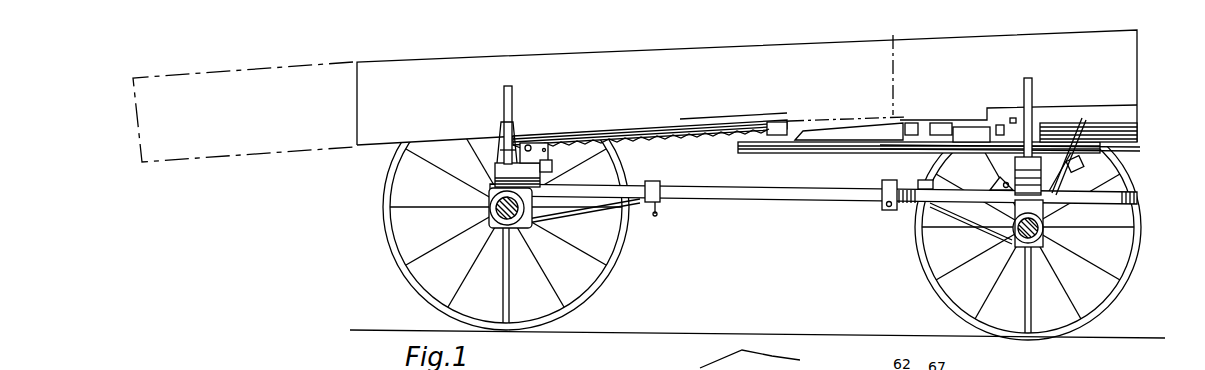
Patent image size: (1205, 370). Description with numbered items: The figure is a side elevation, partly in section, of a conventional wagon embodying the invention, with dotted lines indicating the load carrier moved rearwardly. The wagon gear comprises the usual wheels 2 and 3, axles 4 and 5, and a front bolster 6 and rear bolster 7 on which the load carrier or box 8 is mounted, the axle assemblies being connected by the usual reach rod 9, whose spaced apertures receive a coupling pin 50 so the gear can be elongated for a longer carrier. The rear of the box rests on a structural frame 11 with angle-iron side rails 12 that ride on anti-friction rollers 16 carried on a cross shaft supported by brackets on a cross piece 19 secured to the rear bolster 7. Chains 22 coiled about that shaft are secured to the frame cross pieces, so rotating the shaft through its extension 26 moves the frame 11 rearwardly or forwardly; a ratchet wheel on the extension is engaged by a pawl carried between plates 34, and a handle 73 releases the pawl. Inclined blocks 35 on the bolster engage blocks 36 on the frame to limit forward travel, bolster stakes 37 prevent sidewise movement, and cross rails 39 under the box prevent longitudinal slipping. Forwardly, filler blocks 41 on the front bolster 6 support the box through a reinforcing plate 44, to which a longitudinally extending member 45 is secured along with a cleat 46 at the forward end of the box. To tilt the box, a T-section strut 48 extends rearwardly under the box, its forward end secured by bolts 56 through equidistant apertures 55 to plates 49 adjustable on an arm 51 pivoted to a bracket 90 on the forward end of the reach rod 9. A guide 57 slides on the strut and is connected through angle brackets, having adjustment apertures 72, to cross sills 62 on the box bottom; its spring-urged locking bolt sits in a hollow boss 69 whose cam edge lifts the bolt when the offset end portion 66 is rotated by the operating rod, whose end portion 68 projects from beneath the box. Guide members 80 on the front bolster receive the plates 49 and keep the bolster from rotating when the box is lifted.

The front wheel 2 is at (1128, 278).
The rear wheel 3 is at (400, 272).
The axle 4 is at (1034, 242).
The axle 5 is at (492, 222).
The front bolster 6 is at (1042, 186).
The rear bolster 7 is at (510, 168).
The load carrier or box 8 is at (428, 62).
The reach rod 9 is at (775, 197).
The structural frame 11 is at (733, 104).
The side rail 12 is at (680, 124).
The anti-friction roller 16 is at (537, 143).
The cross piece 19 is at (575, 179).
The chain 22 is at (662, 144).
The shaft extension 26 is at (528, 144).
The plate 34 is at (552, 160).
The inclined block or abutment 35 is at (499, 176).
The block or abutment 36 is at (499, 160).
The bolster stake 37 is at (509, 90).
The cross rail 39 is at (496, 150).
The filler block 41 is at (1038, 125).
The reinforcing plate 44 is at (1062, 118).
The longitudinally extending member 45 is at (1145, 135).
The cleat 46 is at (1140, 115).
The strut 48 is at (833, 154).
The plate 49 is at (1100, 153).
The coupling bolt or pin 50 is at (655, 218).
The arm 51 is at (1045, 193).
The aperture 55 is at (1142, 147).
The bolt 56 is at (1080, 135).
The guide 57 is at (972, 127).
The cross sill 62 is at (910, 123).
The offset end portion 66 is at (1000, 125).
The end portion of operating rod 68 is at (1013, 118).
The hollow boss 69 is at (926, 140).
The aperture 72 is at (912, 138).
The handle 73 is at (544, 146).
The guide member 80 is at (1082, 166).
The bracket 90 is at (996, 182).